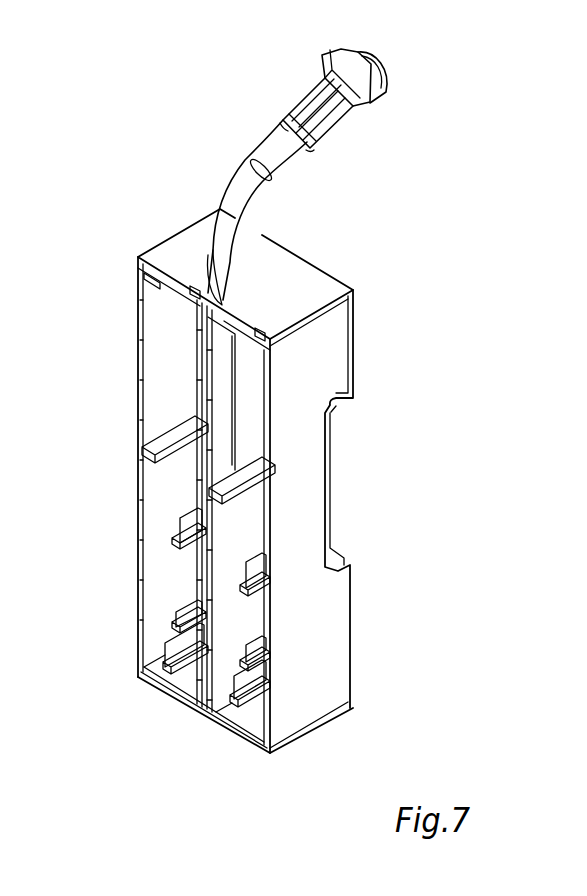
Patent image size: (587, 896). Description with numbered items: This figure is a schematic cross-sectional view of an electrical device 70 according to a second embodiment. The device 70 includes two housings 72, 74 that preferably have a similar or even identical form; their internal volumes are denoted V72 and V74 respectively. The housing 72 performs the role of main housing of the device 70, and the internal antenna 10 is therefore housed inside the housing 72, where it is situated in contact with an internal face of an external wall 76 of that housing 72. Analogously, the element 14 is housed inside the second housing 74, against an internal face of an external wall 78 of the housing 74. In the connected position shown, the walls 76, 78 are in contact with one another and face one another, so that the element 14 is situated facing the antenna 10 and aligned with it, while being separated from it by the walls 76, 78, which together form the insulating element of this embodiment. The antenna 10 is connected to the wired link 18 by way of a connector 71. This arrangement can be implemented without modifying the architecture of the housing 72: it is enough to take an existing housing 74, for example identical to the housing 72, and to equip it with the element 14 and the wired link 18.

The electrical device 70 is at (436, 208).
The connector 71 is at (363, 73).
The wired link 18 is at (243, 205).
The element 14 is at (222, 417).
The housing 72 is at (150, 652).
The housing 74 is at (300, 672).
The internal volume V72 is at (172, 383).
The internal volume V74 is at (238, 517).
The internal antenna 10 is at (186, 462).
The external wall 76 is at (203, 503).
The external wall 78 is at (206, 596).